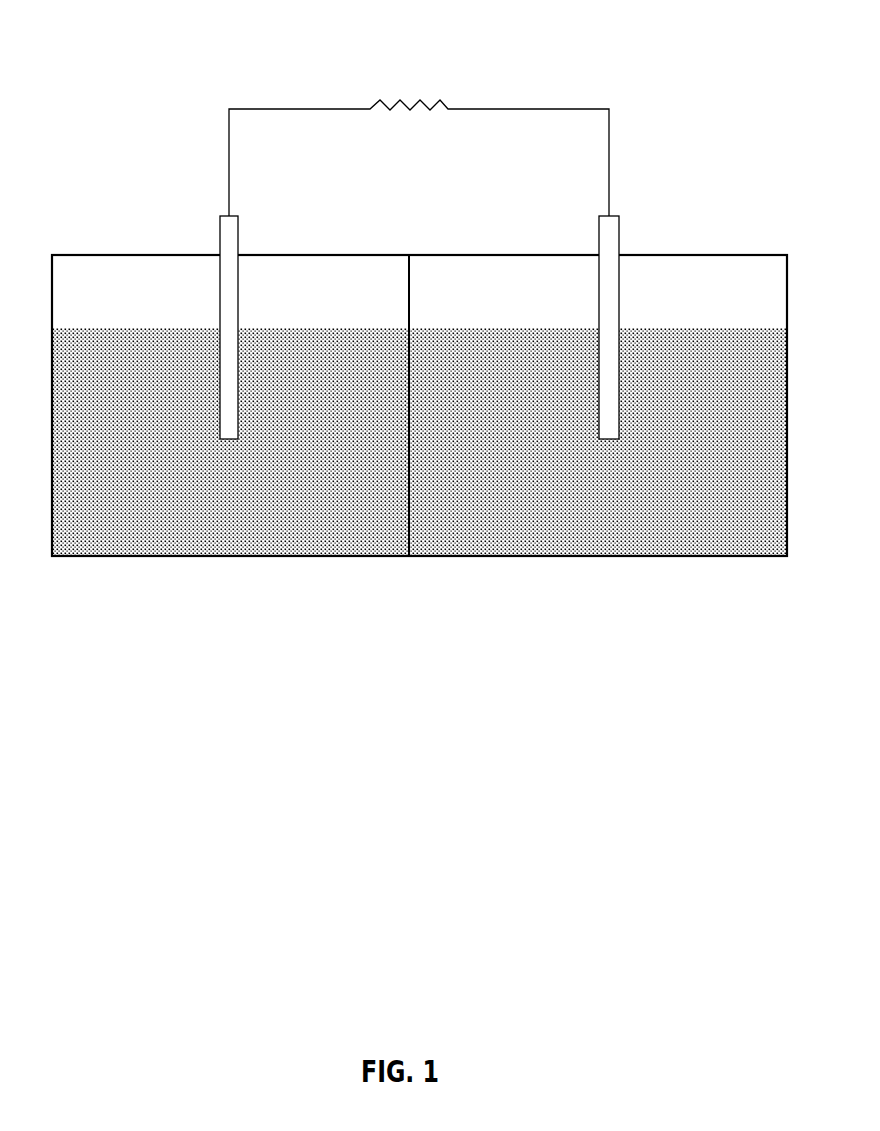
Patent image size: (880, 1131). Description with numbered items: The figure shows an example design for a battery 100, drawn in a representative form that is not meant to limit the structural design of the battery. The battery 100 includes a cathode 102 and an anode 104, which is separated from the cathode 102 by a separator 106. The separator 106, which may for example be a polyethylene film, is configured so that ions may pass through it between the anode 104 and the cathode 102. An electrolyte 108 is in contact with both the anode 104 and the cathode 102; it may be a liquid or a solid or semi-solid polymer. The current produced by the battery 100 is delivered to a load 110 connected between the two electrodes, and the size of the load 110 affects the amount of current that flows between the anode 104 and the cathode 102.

The battery 100 is at (107, 80).
The cathode 102 is at (218, 240).
The anode 104 is at (621, 239).
The separator 106 is at (416, 532).
The electrolyte 108 is at (339, 495).
The load 110 is at (418, 85).